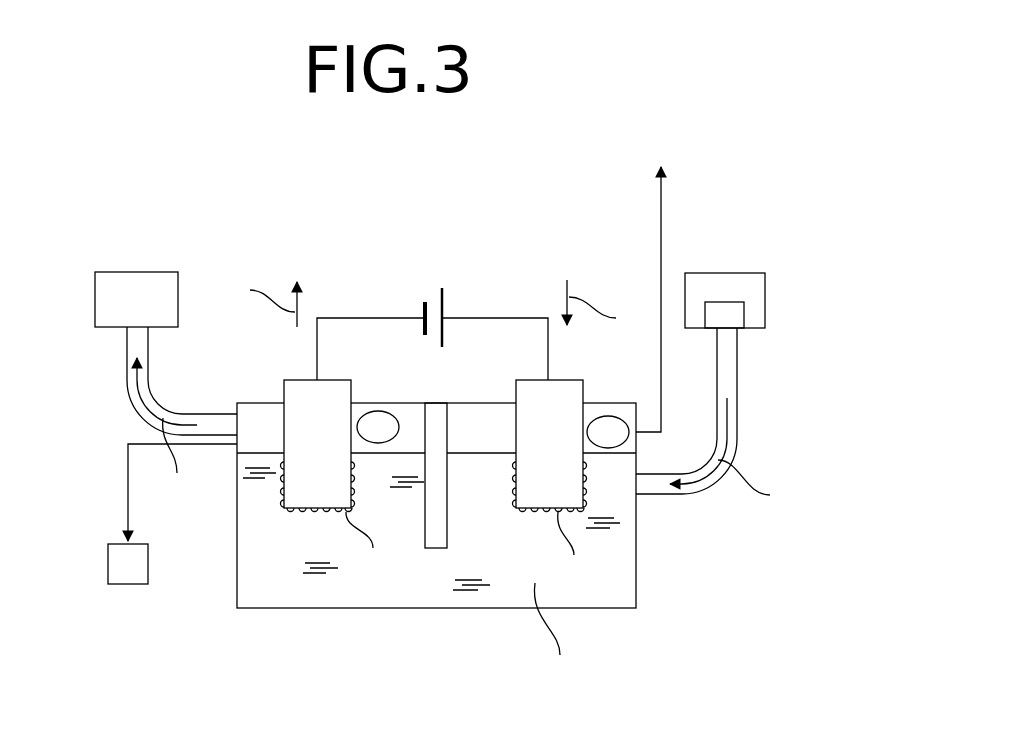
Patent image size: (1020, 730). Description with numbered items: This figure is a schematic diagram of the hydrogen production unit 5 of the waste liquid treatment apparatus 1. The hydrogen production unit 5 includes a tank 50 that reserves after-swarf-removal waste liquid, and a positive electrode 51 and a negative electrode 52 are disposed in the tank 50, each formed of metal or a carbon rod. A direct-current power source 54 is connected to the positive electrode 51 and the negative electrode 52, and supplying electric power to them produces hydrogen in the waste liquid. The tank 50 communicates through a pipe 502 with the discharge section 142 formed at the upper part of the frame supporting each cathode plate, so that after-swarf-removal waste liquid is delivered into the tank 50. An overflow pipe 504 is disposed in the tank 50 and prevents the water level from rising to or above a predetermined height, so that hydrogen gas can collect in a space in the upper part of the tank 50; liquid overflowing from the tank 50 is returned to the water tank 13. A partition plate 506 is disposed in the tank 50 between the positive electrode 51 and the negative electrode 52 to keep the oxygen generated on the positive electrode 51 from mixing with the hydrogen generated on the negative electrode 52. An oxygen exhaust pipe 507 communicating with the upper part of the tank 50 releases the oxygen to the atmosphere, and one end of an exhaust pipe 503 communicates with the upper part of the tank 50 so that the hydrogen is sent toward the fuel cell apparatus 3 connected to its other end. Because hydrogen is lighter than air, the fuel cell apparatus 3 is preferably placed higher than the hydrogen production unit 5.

The waste liquid treatment apparatus 1 is at (514, 186).
The fuel cell apparatus 3 is at (137, 282).
The hydrogen production unit 5 is at (634, 288).
The water tank 13 is at (128, 577).
The tank 50 is at (637, 560).
The positive electrode 51 is at (584, 397).
The negative electrode 52 is at (296, 392).
The direct-current power source 54 is at (446, 305).
The discharge section 142 is at (738, 313).
The pipe 502 is at (731, 418).
The exhaust pipe 503 is at (140, 407).
The overflow pipe 504 is at (126, 492).
The partition plate 506 is at (447, 420).
The oxygen exhaust pipe 507 is at (659, 195).